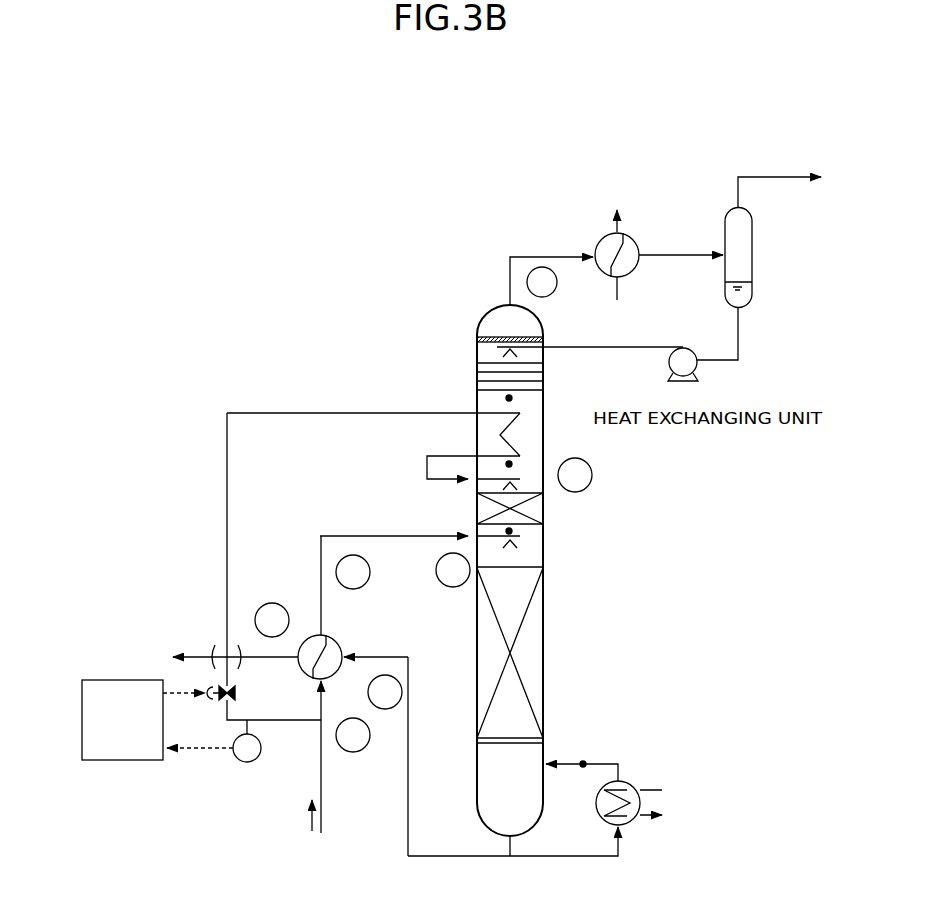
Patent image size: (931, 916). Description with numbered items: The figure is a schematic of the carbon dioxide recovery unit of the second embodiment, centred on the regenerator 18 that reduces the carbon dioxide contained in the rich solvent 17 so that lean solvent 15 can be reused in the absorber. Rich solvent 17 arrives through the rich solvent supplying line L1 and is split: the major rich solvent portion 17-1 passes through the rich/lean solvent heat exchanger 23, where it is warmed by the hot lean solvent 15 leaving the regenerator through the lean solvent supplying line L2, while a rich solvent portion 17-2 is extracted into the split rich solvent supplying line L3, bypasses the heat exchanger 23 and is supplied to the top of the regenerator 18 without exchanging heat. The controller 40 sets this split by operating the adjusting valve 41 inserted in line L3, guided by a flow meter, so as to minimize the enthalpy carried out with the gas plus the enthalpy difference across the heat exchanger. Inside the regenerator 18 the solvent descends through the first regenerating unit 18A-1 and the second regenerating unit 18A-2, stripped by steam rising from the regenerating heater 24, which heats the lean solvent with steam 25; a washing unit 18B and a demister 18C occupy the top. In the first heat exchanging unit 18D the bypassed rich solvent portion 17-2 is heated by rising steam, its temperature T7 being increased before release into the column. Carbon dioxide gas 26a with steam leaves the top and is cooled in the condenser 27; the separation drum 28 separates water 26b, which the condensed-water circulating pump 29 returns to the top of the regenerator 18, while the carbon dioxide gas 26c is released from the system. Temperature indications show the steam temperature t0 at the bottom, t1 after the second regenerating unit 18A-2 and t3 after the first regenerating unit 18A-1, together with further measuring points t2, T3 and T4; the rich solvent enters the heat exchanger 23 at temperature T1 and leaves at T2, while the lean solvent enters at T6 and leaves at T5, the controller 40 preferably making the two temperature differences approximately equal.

The regenerator 18 is at (570, 627).
The first regenerating unit 18A-1 is at (547, 508).
The second regenerating unit 18A-2 is at (545, 672).
The washing unit 18B is at (545, 381).
The demister 18C is at (490, 333).
The first heat exchanging unit 18D is at (520, 434).
The rich solvent 17 is at (311, 818).
The major rich solvent portion 17-1 is at (428, 546).
The rich solvent portion 17-2 is at (460, 488).
The lean solvent 15 is at (212, 648).
The rich/lean solvent heat exchanger 23 is at (340, 645).
The regenerating heater 24 is at (632, 772).
The steam 25 is at (660, 790).
The CO2 gas 26a is at (562, 250).
The water 26b is at (585, 355).
The CO2 gas 26c is at (802, 168).
The condenser 27 is at (630, 244).
The separation drum 28 is at (752, 250).
The condensed-water circulating pump 29 is at (690, 350).
The controller 40 is at (124, 680).
The adjusting valve 41 is at (218, 700).
The temperature of rich solvent at heat exchanger entering side T1 is at (321, 735).
The temperature of rich solvent at heat exchanger exiting side T2 is at (321, 570).
The temperature sensor T3 is at (485, 537).
The temperature sensor T4 is at (510, 283).
The temperature of lean solvent at heat exchanger exiting side T5 is at (385, 657).
The temperature of lean solvent at heat exchanger entering side T6 is at (272, 657).
The temperature of rich solvent portion after first heat exchanging unit T7 is at (520, 478).
The steam temperature at regenerator bottom t0 is at (584, 760).
The steam temperature after second regenerating unit t1 is at (514, 531).
The temperature measurement point t2 is at (513, 464).
The steam temperature after first regenerating unit t3 is at (514, 398).
The rich solvent supplying line L1 is at (321, 780).
The lean solvent supplying line L2 is at (408, 828).
The split rich solvent supplying line L3 is at (296, 720).